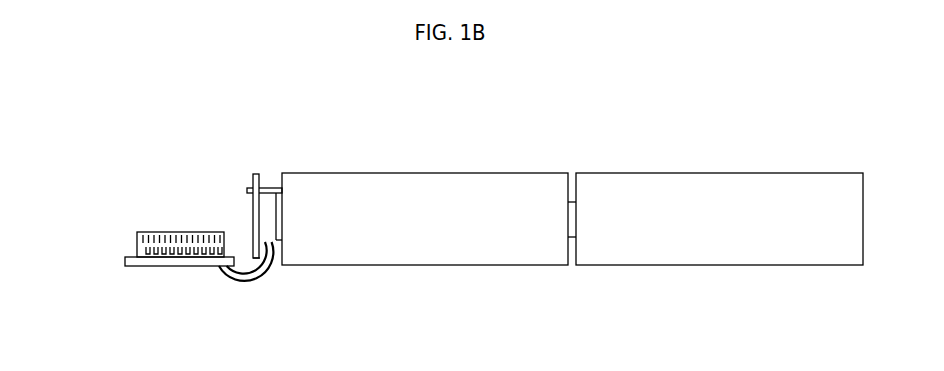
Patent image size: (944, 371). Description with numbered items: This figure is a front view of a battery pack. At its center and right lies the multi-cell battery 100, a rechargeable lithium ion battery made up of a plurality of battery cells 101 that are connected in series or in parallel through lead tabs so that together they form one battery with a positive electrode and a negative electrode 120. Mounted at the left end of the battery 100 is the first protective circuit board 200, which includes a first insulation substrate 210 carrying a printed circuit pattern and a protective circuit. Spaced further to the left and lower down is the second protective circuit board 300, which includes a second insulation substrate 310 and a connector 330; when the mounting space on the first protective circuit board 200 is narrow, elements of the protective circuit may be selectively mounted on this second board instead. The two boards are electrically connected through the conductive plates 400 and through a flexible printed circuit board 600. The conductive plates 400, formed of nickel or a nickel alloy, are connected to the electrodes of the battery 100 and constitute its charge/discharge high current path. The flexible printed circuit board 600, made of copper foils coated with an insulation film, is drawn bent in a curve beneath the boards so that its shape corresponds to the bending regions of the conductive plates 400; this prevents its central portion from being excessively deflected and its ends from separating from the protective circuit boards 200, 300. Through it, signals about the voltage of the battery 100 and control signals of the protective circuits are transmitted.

The multi-cell battery 100 is at (572, 186).
The battery cell 101 is at (660, 185).
The negative electrode 120 is at (277, 188).
The first protective circuit board 200 is at (234, 185).
The first insulation substrate 210 is at (258, 172).
The second protective circuit board 300 is at (135, 254).
The second insulation substrate 310 is at (147, 266).
The connector 330 is at (138, 236).
The conductive plates 400 is at (246, 252).
The flexible printed circuit board 600 is at (256, 295).